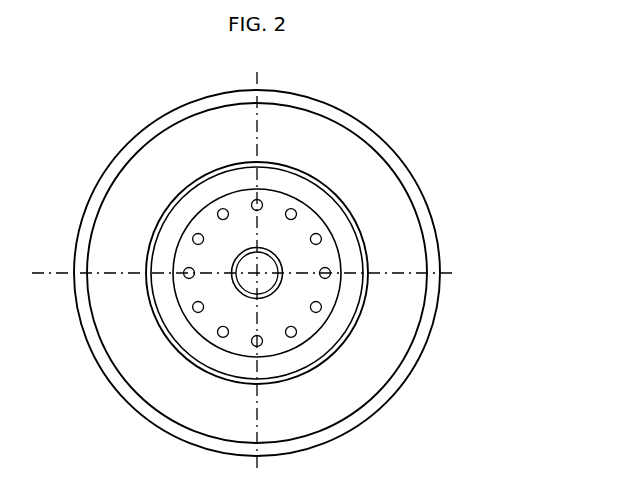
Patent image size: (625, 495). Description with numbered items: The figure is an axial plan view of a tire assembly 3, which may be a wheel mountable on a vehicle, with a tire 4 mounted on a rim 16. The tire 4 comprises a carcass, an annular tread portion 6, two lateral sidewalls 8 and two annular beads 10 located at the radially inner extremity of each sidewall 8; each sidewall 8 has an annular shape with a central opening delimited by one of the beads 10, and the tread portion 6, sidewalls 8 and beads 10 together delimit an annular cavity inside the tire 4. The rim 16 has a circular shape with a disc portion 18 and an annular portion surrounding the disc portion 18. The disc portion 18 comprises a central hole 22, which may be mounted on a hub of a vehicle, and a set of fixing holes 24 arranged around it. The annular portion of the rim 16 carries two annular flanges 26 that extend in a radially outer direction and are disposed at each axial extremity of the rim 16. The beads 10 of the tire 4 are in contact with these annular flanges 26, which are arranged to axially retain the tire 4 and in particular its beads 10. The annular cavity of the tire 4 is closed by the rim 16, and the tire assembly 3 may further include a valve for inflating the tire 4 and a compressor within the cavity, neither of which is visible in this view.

The tire assembly 3 is at (96, 135).
The tire 4 is at (342, 118).
The tread portion 6 is at (203, 97).
The sidewall 8 is at (195, 395).
The bead 10 is at (348, 337).
The rim 16 is at (235, 208).
The disc portion 18 is at (223, 303).
The central hole 22 is at (278, 287).
The fixing holes 24 is at (288, 208).
The annular flanges 26 is at (362, 235).